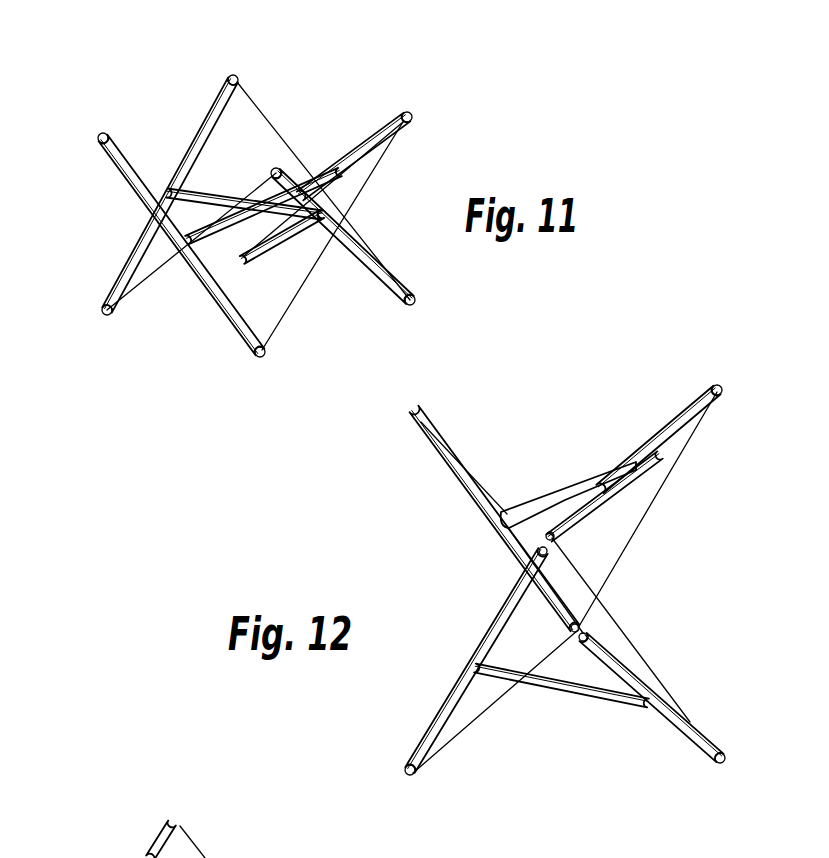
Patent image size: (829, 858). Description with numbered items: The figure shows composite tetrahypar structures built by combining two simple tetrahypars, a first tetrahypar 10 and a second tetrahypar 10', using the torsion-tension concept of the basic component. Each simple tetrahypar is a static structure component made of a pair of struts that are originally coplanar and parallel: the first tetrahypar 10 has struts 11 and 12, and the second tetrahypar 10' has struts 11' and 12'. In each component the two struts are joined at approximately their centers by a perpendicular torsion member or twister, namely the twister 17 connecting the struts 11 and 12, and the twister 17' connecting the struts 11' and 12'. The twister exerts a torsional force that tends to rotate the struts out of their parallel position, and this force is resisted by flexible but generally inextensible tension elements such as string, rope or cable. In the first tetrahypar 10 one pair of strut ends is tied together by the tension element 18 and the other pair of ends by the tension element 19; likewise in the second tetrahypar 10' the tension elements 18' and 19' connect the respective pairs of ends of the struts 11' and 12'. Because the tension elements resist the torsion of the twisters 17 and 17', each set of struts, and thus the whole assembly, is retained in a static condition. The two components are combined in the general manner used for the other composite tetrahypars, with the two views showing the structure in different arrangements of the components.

In FIG. 11, the simple tetrahypar 10 is at (181, 181).
In FIG. 12, the simple tetrahypar 10 is at (563, 557).
In FIG. 11, the simple tetrahypar 10' is at (393, 192).
In FIG. 12, the simple tetrahypar 10' is at (635, 720).
In FIG. 11, the strut 11 is at (134, 194).
In FIG. 12, the strut 11 is at (633, 442).
In FIG. 11, the strut 11' is at (354, 135).
In FIG. 12, the strut 11' is at (651, 697).
In FIG. 11, the strut 12 is at (327, 265).
In FIG. 12, the strut 12 is at (462, 519).
In FIG. 11, the strut 12' is at (182, 267).
In FIG. 12, the strut 12' is at (441, 660).
In FIG. 11, the twister 17 is at (244, 189).
In FIG. 12, the twister 17 is at (568, 485).
In FIG. 11, the twister 17' is at (263, 181).
In FIG. 12, the twister 17' is at (561, 722).
In FIG. 11, the tension element 18 is at (268, 236).
In FIG. 12, the tension element 18 is at (502, 524).
In FIG. 12, the tension element 18' is at (495, 705).
In FIG. 11, the tension element 19 is at (321, 192).
In FIG. 12, the tension element 19 is at (649, 510).
In FIG. 12, the tension element 19' is at (621, 630).